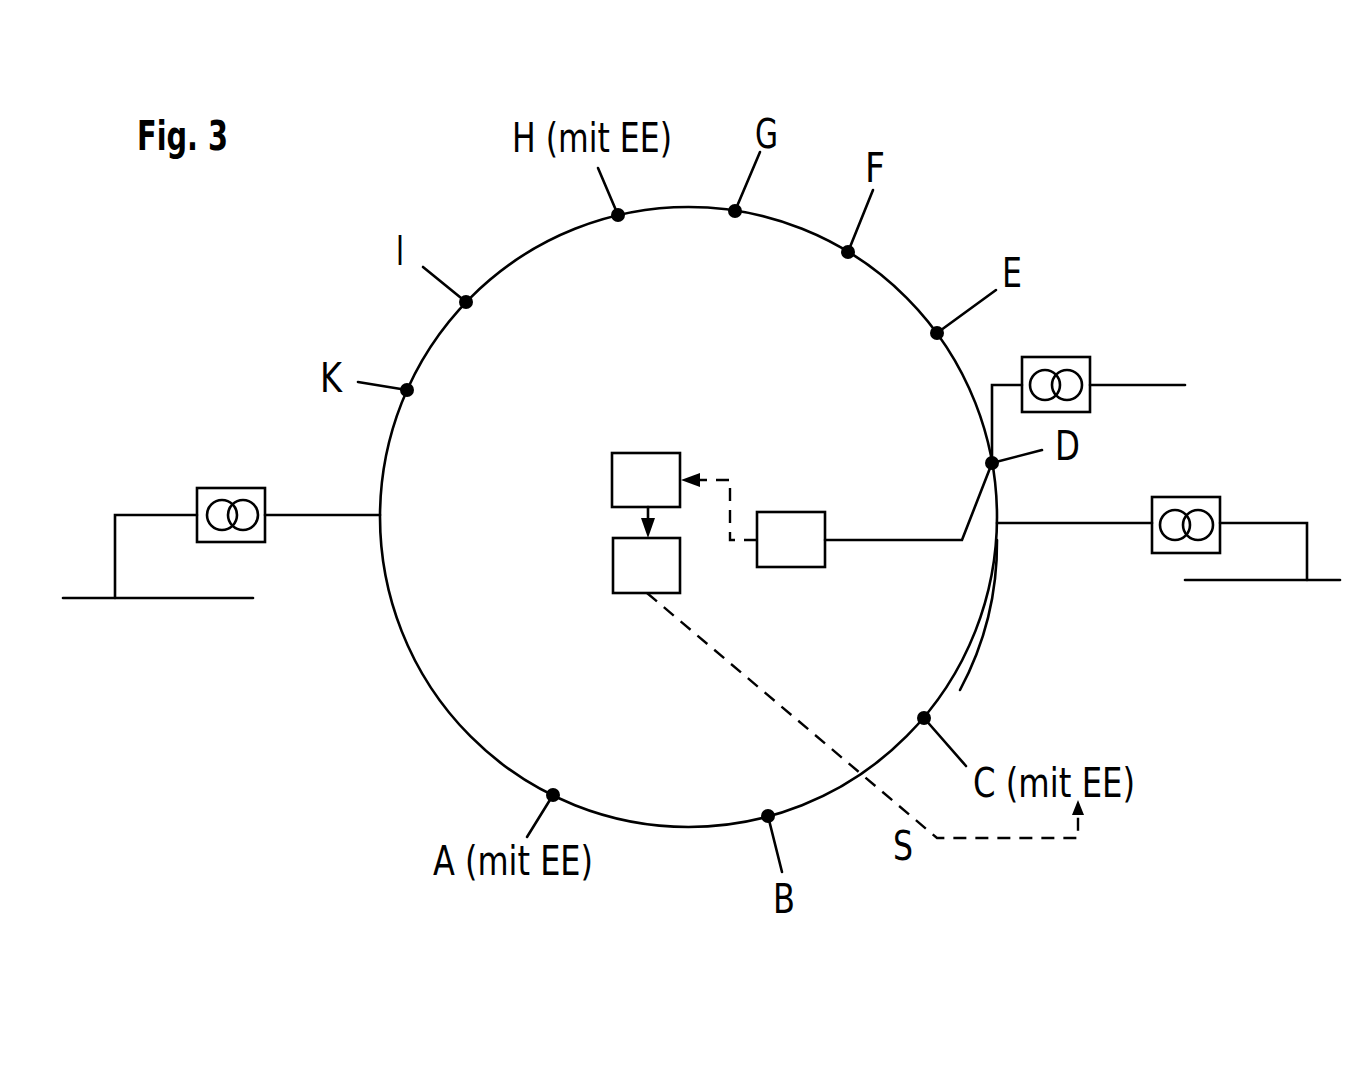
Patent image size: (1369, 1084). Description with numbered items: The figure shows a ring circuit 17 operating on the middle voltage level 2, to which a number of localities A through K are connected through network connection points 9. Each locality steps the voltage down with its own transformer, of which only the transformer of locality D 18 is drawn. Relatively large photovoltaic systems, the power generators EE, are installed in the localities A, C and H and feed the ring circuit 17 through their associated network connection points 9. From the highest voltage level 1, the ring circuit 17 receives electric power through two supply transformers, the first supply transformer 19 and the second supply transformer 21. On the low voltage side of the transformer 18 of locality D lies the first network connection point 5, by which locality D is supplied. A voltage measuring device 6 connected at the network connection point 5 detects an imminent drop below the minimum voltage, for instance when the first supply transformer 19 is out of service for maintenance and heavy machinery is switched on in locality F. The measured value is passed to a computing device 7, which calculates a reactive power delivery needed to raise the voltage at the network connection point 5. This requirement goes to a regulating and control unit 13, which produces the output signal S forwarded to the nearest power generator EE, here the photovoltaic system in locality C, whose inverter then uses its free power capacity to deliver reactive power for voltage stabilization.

The highest voltage level 1 is at (145, 598).
The middle voltage level 2 is at (892, 282).
The first network connection point 5 is at (1167, 385).
The voltage measuring device 6 is at (790, 567).
The computing device 7 is at (645, 453).
The network connection point 9 is at (618, 215).
The regulating and control unit 13 is at (613, 592).
The ring circuit 17 is at (985, 610).
The transformer of locality D 18 is at (1092, 355).
The first supply transformer 19 is at (1220, 498).
The second supply transformer 21 is at (197, 490).